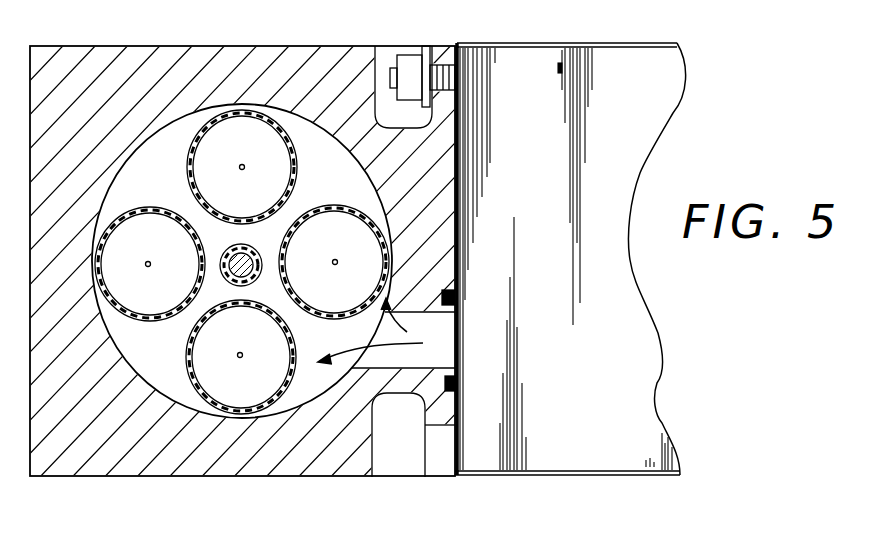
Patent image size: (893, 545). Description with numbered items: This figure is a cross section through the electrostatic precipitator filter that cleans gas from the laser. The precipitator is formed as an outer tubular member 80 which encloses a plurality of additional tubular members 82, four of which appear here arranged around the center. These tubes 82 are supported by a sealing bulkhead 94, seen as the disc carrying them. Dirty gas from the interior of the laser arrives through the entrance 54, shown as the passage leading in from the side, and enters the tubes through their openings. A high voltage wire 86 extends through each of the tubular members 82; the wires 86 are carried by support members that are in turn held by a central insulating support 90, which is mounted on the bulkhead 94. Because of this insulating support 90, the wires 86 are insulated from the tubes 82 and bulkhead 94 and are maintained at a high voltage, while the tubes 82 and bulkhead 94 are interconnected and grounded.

The tubular member 80 is at (128, 47).
The additional tubular members 82 is at (158, 157).
The high voltage wire 86 is at (244, 165).
The central insulating support 90 is at (261, 250).
The sealing bulkhead 94 is at (172, 375).
The entrance 54 is at (425, 365).